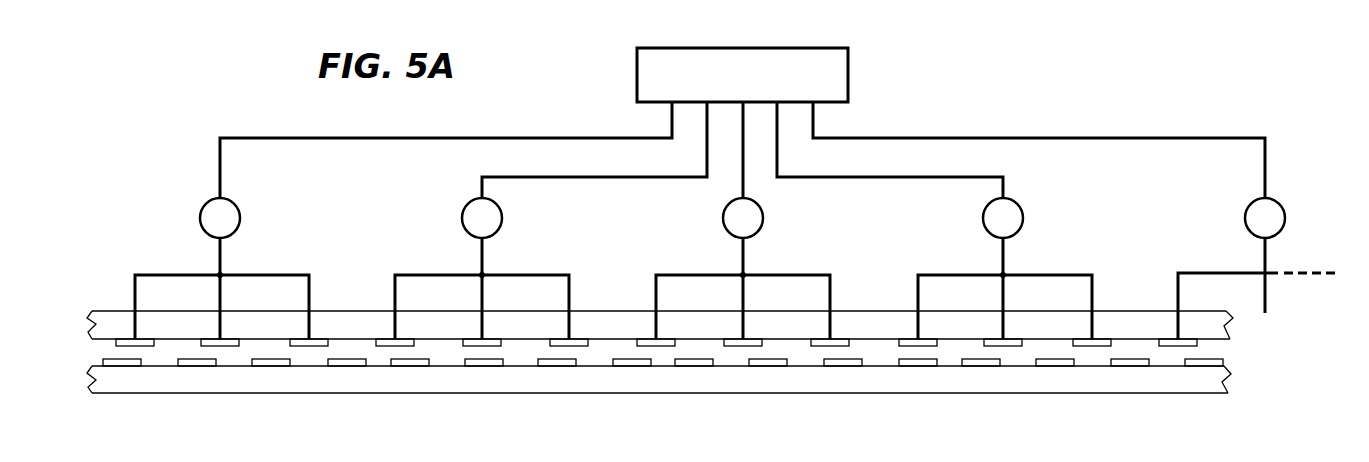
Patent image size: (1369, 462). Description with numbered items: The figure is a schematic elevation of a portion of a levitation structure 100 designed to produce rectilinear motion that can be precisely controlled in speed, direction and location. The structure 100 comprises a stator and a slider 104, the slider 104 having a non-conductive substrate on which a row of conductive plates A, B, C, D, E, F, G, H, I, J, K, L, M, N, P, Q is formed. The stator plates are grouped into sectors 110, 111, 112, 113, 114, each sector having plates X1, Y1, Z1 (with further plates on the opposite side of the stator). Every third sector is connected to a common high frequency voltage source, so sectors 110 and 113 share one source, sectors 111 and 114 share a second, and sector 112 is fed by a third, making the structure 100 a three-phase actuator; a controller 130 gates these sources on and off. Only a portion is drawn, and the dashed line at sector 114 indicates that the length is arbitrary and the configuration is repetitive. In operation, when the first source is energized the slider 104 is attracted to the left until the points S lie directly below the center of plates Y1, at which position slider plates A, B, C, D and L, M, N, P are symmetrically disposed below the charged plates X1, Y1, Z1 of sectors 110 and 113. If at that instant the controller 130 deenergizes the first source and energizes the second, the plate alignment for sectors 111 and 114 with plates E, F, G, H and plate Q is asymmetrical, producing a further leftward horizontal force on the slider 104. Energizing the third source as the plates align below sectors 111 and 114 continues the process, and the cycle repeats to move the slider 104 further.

The levitation structure 100 is at (1015, 91).
The slider 104 is at (660, 380).
The sector 110 is at (197, 263).
The sector 111 is at (457, 263).
The sector 112 is at (717, 263).
The sector 113 is at (978, 263).
The sector 114 is at (1240, 263).
The controller 130 is at (637, 70).
The plate X1 is at (125, 338).
The plate Y1 is at (232, 339).
The plate Z1 is at (297, 339).
The points S is at (238, 367).
The conductive plate A is at (122, 367).
The conductive plate B is at (197, 367).
The conductive plate C is at (271, 367).
The conductive plate D is at (346, 367).
The conductive plate E is at (408, 367).
The conductive plate F is at (483, 367).
The conductive plate G is at (557, 367).
The conductive plate H is at (632, 367).
The conductive plate I is at (693, 367).
The conductive plate J is at (767, 367).
The conductive plate K is at (842, 367).
The conductive plate L is at (917, 367).
The conductive plate M is at (979, 367).
The conductive plate N is at (1053, 367).
The conductive plate P is at (1128, 367).
The conductive plate Q is at (1203, 367).